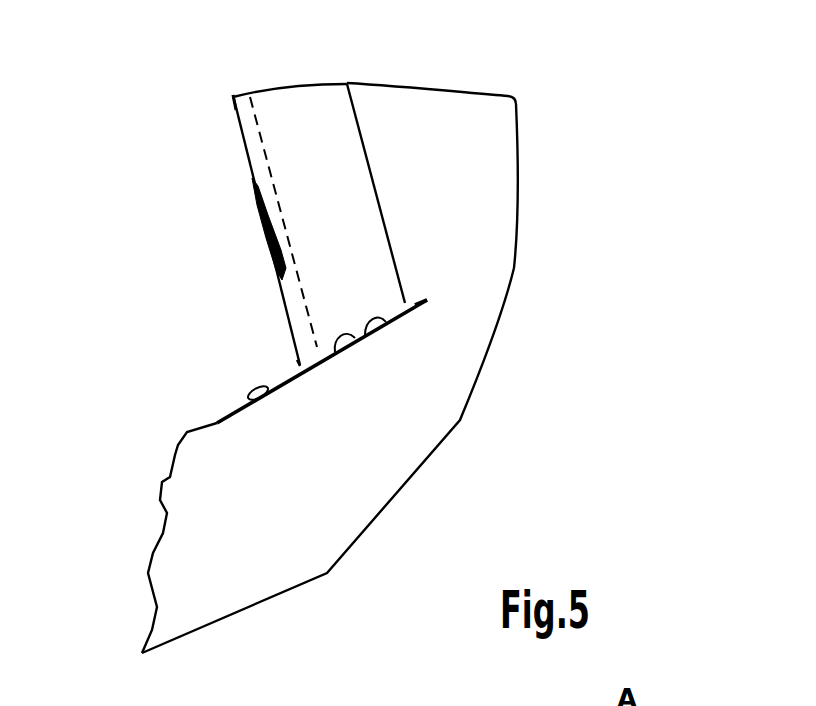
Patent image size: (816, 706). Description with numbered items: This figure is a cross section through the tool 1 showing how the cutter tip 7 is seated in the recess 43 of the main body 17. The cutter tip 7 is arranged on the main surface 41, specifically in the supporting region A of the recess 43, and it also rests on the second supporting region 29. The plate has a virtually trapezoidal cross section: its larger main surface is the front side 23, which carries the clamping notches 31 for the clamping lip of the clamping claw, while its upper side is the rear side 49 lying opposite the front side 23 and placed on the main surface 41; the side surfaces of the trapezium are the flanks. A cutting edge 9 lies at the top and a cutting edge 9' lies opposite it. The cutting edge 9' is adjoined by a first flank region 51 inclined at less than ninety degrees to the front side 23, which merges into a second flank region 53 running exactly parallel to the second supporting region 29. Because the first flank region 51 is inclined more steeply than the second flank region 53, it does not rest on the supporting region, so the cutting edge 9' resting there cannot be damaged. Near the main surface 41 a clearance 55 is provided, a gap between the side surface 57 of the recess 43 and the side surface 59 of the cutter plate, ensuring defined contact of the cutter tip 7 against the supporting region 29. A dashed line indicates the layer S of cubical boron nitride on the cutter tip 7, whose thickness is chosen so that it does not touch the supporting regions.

The tool 1 is at (535, 213).
The cutter tip 7 is at (222, 130).
The cutting edge 9 is at (186, 56).
The cutting edge 9' is at (196, 362).
The layer of cubical boron nitride S is at (253, 157).
The rear side 49 is at (350, 134).
The supporting region A is at (387, 168).
The main surface 41 is at (397, 220).
The clamping notches 31 is at (262, 228).
The front side 23 is at (272, 316).
The second flank region 53 is at (397, 320).
The clearance 55 is at (435, 300).
The first flank region 51 is at (316, 352).
The second supporting region 29 is at (355, 347).
The side surface of the cutter plate 59 is at (333, 352).
The side surface of the recess 57 is at (212, 409).
The recess 43 is at (270, 392).
The main body 17 is at (258, 577).